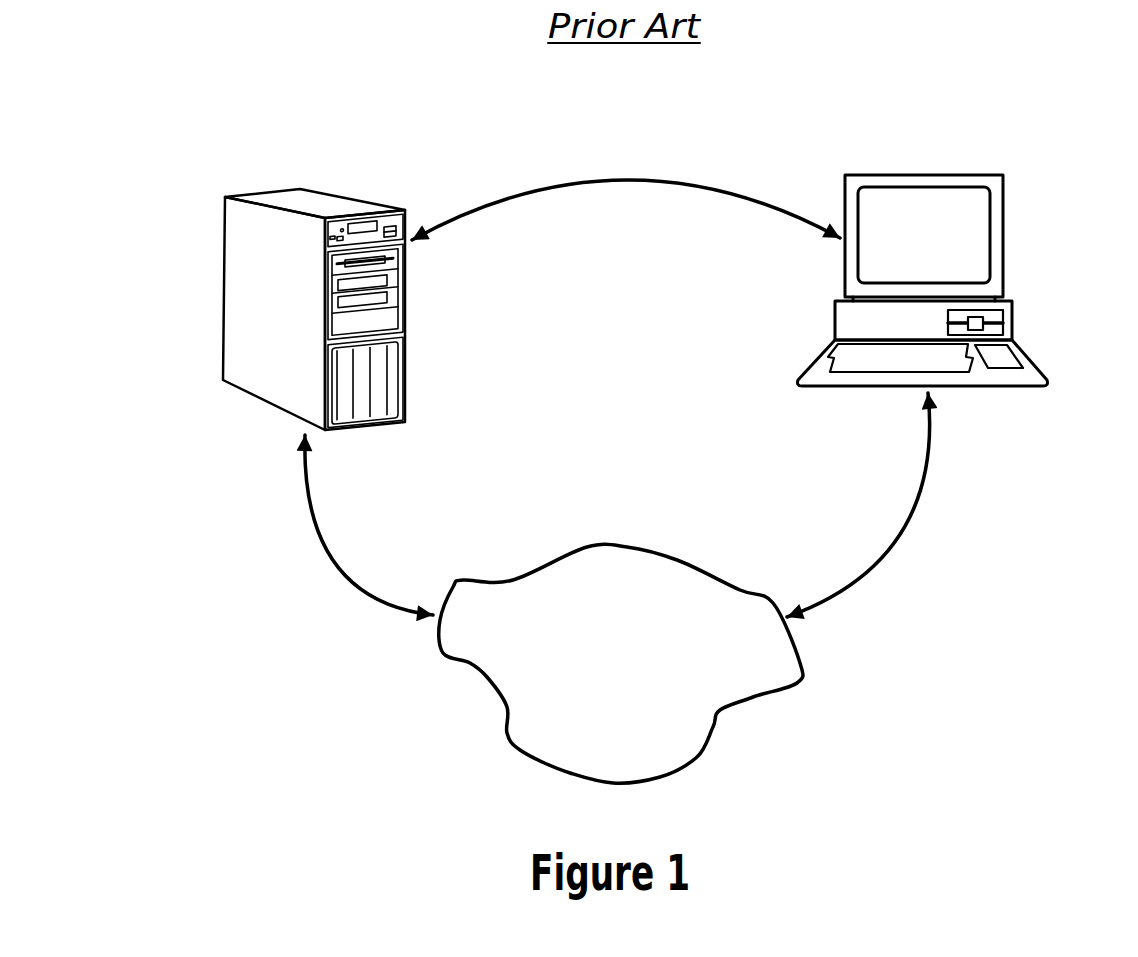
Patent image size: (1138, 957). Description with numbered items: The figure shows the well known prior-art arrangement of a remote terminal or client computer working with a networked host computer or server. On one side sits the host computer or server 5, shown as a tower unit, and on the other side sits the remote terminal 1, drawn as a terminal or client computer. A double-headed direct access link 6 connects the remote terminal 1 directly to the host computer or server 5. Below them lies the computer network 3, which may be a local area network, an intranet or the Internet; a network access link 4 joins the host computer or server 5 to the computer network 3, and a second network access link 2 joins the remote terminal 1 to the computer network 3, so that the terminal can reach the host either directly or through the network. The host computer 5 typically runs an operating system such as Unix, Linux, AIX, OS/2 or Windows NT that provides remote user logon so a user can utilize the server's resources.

The remote terminal 1 is at (1017, 295).
The network access link (client to network) 2 is at (868, 573).
The computer network 3 is at (677, 558).
The network access link (host to network) 4 is at (343, 567).
The host computer or server 5 is at (407, 333).
The direct access link 6 is at (628, 178).